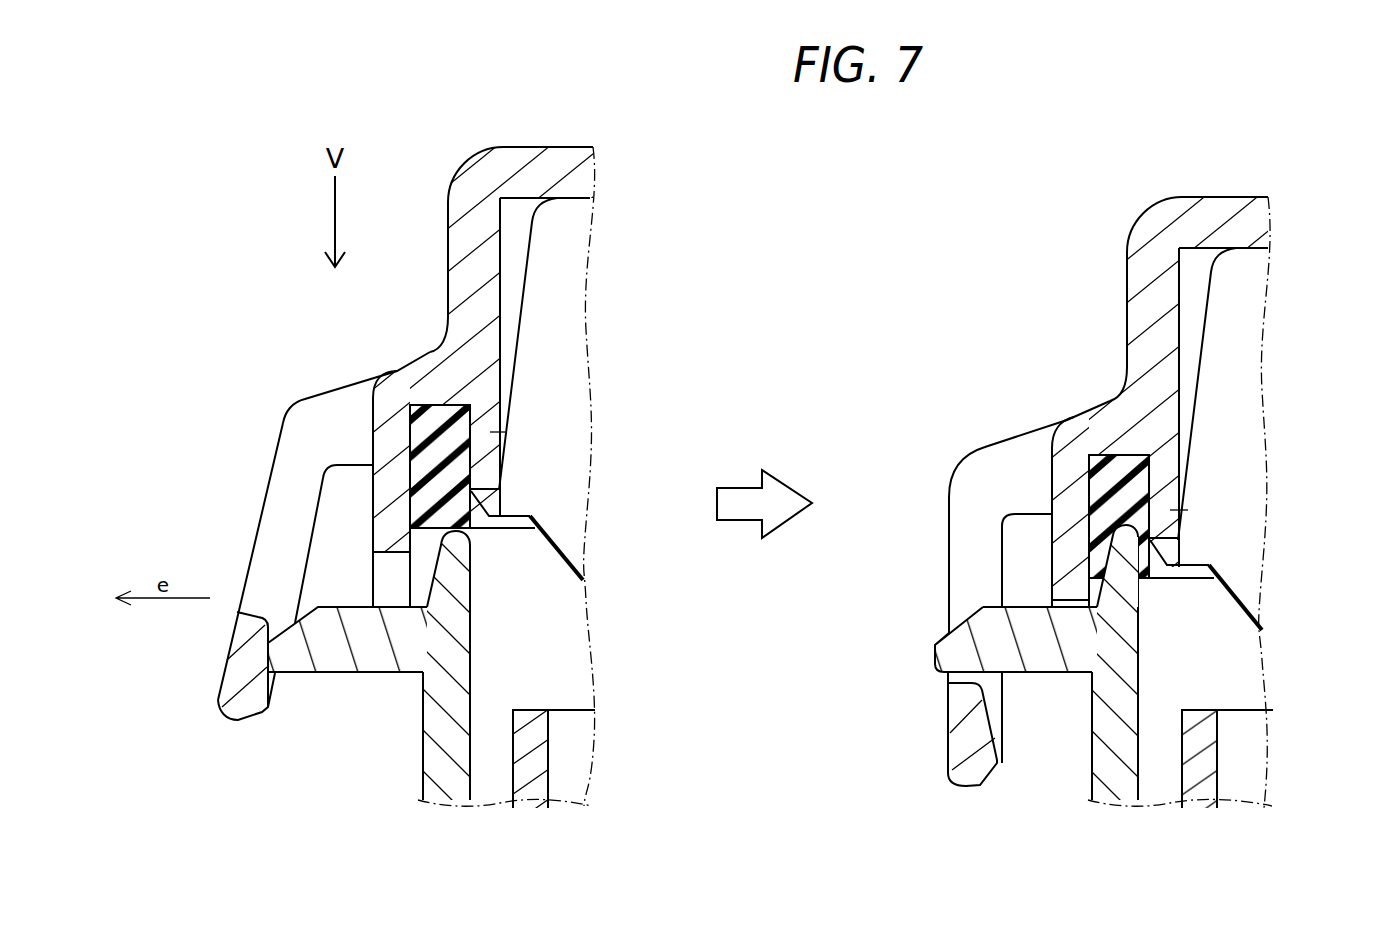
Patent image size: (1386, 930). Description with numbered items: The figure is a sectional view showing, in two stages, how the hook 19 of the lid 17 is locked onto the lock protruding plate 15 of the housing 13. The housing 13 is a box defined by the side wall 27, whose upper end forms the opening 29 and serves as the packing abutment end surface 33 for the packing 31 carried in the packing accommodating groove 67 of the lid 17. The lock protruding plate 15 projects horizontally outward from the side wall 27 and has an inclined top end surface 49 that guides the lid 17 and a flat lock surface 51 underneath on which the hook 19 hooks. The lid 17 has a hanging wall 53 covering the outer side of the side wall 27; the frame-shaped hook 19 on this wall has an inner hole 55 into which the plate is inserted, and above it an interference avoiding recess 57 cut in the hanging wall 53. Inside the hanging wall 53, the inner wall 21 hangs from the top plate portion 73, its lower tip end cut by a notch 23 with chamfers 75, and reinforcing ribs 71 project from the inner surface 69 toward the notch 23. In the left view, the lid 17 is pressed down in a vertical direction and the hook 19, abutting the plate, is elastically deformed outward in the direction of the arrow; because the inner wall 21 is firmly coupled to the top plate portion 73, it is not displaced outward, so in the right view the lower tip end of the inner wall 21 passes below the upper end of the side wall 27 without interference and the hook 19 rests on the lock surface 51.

The housing 13 is at (477, 828).
The lock protruding plate 15 is at (400, 557).
The lid 17 is at (550, 128).
The hook 19 is at (208, 736).
The inner wall 21 is at (498, 432).
The notch 23 is at (494, 503).
The side wall 27 is at (440, 783).
The opening 29 is at (475, 557).
The packing 31 is at (456, 395).
The packing abutment end surface 33 is at (488, 440).
The inclined top end surface 49 is at (308, 605).
The lock surface 51 is at (335, 673).
The hanging wall 53 is at (372, 438).
The inner hole 55 is at (275, 535).
The interference avoiding recess 57 is at (352, 604).
The packing accommodating groove 67 is at (412, 420).
The inner surface 69 is at (507, 343).
The reinforcing rib 71 is at (515, 287).
The top plate portion 73 is at (565, 156).
The chamfer 75 is at (485, 538).